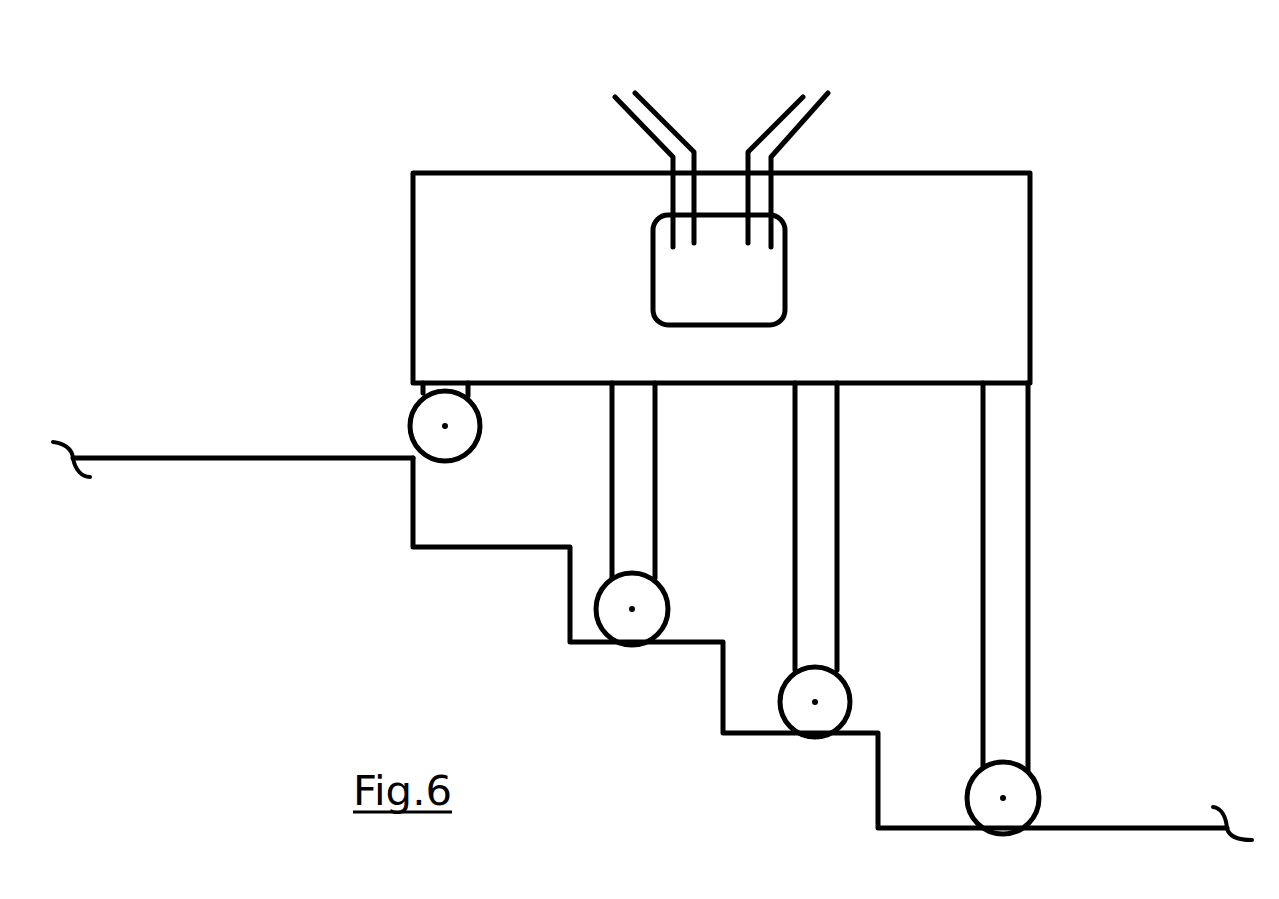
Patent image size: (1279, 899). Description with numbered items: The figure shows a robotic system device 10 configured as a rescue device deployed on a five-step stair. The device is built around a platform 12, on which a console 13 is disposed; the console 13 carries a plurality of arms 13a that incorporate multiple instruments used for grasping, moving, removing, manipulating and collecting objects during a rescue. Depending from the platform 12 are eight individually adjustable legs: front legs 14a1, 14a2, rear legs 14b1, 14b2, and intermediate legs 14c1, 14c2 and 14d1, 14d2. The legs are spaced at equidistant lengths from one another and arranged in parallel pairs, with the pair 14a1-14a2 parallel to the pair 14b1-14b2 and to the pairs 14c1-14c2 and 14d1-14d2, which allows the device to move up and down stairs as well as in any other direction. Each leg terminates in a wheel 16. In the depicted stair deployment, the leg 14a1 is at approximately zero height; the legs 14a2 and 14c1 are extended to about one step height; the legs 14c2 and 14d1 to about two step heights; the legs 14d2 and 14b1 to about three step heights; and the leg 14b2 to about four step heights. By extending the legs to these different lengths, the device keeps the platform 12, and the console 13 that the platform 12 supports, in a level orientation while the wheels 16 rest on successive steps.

The system device 10 is at (495, 115).
The platform 12 is at (391, 278).
The console 13 is at (719, 270).
The arms 13a is at (664, 86).
The front leg 14a1 is at (405, 395).
The front leg 14a2 is at (409, 408).
The rear leg 14b1 is at (1103, 590).
The rear leg 14b2 is at (1103, 640).
The intermediate leg 14c1 is at (732, 487).
The intermediate leg 14c2 is at (732, 540).
The intermediate leg 14d1 is at (920, 595).
The intermediate leg 14d2 is at (920, 645).
The wheels 16 is at (419, 448).